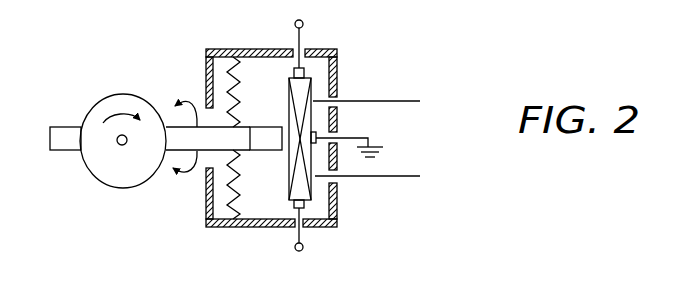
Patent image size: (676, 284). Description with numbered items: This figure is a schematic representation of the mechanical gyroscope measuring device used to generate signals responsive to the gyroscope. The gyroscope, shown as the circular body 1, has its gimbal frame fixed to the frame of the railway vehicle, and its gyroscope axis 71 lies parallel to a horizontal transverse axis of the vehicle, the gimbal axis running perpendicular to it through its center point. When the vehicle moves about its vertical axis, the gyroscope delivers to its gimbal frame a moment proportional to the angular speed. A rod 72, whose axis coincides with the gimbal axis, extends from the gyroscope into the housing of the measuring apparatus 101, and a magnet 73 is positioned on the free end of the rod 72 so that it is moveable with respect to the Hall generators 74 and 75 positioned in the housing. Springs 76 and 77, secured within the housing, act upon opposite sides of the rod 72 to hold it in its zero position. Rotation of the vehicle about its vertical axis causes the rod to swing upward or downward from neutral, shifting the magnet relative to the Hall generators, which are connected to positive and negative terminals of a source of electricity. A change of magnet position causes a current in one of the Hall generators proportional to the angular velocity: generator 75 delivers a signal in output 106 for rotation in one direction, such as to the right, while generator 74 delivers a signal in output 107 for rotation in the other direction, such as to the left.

The rotating member (motor/drum) 1 is at (137, 177).
The gyroscope axis 71 is at (118, 144).
The rod 72 is at (203, 127).
The magnet 73 is at (265, 142).
The Hall generator 74 is at (310, 222).
The Hall generator 75 is at (306, 80).
The spring 76 is at (232, 183).
The spring 77 is at (243, 77).
The housing of the measuring apparatus 101 is at (232, 228).
The output 106 is at (368, 101).
The output 107 is at (398, 177).